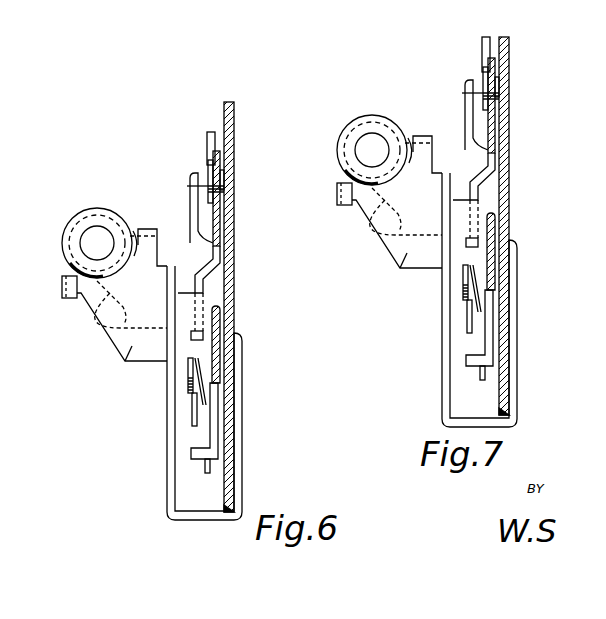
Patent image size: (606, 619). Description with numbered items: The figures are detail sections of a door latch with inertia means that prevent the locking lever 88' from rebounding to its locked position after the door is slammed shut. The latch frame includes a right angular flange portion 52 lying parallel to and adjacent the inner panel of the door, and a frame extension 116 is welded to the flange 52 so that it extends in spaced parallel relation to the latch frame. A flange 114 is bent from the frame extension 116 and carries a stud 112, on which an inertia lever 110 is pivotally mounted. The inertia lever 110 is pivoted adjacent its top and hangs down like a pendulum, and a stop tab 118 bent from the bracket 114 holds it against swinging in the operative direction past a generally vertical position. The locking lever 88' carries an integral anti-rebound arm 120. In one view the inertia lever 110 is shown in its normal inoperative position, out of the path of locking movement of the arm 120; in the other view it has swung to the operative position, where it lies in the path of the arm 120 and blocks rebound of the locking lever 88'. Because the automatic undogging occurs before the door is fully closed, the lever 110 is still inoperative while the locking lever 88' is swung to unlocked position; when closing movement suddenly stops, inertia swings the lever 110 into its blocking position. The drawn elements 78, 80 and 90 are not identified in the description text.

In FIG. 7, the right angular flange portion 52 is at (509, 165).
In FIG. 6, the right angular flange portion 52 is at (234, 120).
In FIG. 7, the spring 78 is at (463, 288).
In FIG. 6, the spring 78 is at (188, 381).
In FIG. 7, the bracket 80 is at (485, 338).
In FIG. 6, the bracket 80 is at (208, 468).
In FIG. 7, the locking lever 88' is at (455, 54).
In FIG. 6, the locking lever 88' is at (186, 142).
In FIG. 7, the pin 90 is at (483, 93).
In FIG. 6, the pin 90 is at (208, 184).
In FIG. 7, the inertia lever 110 is at (392, 221).
In FIG. 6, the inertia lever 110 is at (90, 318).
In FIG. 7, the stud 112 is at (362, 150).
In FIG. 6, the stud 112 is at (87, 243).
In FIG. 7, the flange 114 is at (407, 253).
In FIG. 6, the flange 114 is at (130, 332).
In FIG. 7, the frame extension 116 is at (446, 348).
In FIG. 6, the frame extension 116 is at (171, 436).
In FIG. 7, the stop tab 118 is at (337, 196).
In FIG. 6, the stop tab 118 is at (62, 290).
In FIG. 7, the anti-rebound arm 120 is at (490, 183).
In FIG. 6, the anti-rebound arm 120 is at (200, 276).